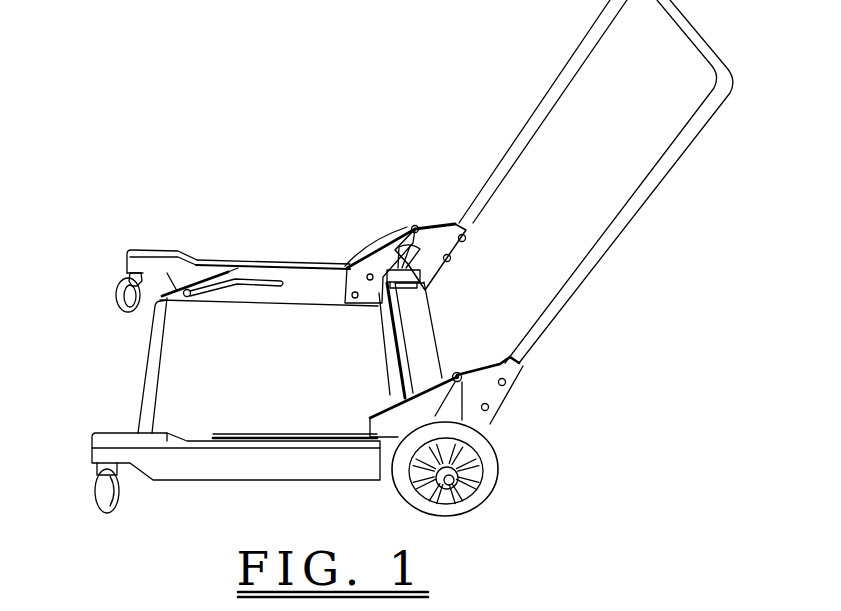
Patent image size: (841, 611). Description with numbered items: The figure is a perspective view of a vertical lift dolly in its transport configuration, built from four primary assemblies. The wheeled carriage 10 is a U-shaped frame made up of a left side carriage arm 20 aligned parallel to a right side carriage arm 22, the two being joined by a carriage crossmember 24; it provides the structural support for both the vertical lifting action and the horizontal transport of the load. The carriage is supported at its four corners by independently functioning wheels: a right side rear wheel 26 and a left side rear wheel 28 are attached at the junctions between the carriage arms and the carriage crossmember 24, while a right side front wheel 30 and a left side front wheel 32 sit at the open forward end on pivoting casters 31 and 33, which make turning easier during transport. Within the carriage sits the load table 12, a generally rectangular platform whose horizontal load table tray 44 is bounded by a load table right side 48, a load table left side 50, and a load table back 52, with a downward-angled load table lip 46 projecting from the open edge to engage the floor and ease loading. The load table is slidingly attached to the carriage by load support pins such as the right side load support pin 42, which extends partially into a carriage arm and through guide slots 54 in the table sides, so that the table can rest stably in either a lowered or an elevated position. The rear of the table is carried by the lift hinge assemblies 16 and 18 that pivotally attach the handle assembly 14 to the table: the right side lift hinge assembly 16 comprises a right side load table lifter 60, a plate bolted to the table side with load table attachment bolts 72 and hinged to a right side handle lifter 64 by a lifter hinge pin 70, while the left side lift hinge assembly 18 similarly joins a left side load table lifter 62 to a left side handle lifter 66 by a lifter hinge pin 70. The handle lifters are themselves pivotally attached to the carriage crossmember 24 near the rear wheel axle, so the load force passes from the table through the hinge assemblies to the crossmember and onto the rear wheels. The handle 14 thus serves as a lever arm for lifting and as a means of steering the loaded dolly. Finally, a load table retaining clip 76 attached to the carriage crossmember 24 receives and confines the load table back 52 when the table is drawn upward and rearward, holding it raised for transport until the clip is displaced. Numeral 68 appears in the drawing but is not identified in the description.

The wheeled carriage 10 is at (254, 253).
The load table 12 is at (145, 352).
The handle assembly 14 is at (613, 243).
The right side lift hinge assembly 16 is at (418, 218).
The left side lift hinge assembly 18 is at (489, 364).
The left side carriage arm 20 is at (270, 468).
The right side carriage arm 22 is at (157, 255).
The carriage crossmember 24 is at (415, 315).
The right side rear wheel 26 is at (384, 248).
The left side rear wheel 28 is at (493, 483).
The right side front wheel 30 is at (116, 297).
The pivoting caster 31 is at (125, 278).
The left side front wheel 32 is at (95, 500).
The pivoting caster 33 is at (95, 471).
The right side load support pin 42 is at (186, 290).
The load table tray 44 is at (256, 380).
The load table lip 46 is at (145, 410).
The load table right side 48 is at (297, 280).
The load table left side 50 is at (313, 435).
The load table back 52 is at (387, 347).
The guide slots 54 is at (248, 286).
The right side load table lifter 60 is at (353, 262).
The left side load table lifter 62 is at (385, 418).
The right side handle lifter 64 is at (442, 227).
The left side handle lifter 66 is at (506, 382).
The holes 68 is at (451, 258).
The lifter hinge pin 70 is at (414, 224).
The load table attachment bolts 72 is at (356, 290).
The load table retaining clip 76 is at (422, 282).